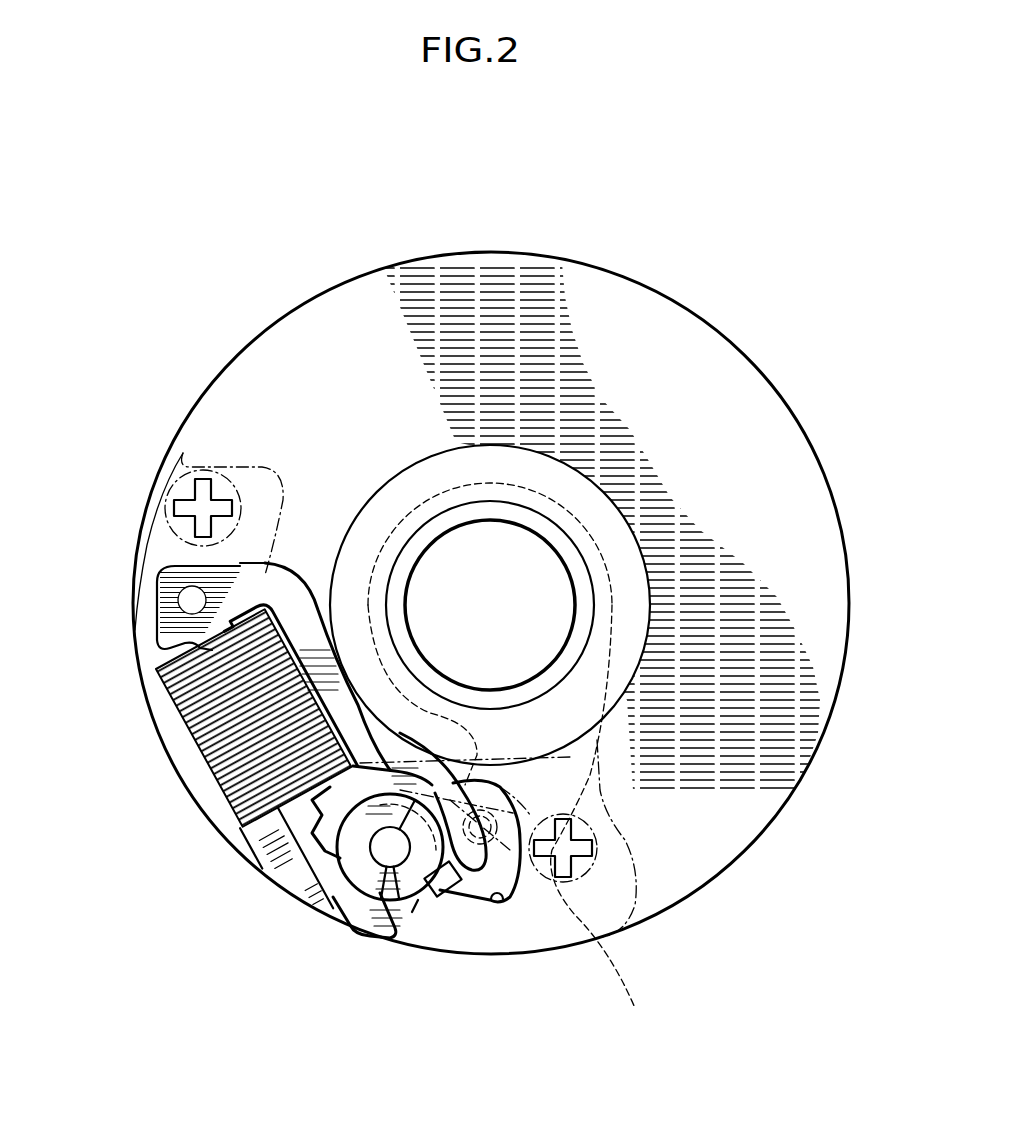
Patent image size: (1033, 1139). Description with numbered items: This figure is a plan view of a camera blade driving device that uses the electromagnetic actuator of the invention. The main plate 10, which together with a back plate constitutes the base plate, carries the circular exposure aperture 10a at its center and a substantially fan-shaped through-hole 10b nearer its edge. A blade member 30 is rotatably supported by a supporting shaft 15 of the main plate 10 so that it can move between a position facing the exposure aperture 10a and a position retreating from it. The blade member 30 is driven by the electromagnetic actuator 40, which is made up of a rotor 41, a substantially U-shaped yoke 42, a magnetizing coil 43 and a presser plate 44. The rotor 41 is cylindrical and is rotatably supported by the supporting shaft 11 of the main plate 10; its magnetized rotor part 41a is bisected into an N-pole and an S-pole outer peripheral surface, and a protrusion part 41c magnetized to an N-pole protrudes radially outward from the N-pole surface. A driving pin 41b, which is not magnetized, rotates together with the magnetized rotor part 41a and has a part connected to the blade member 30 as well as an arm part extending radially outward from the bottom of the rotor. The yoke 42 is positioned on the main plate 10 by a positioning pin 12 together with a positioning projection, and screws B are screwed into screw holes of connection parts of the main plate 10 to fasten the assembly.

The main plate 10 is at (628, 277).
The exposure aperture 10a is at (408, 600).
The through-hole 10b is at (495, 900).
The supporting shaft 11 is at (410, 905).
The positioning pin 12 is at (180, 598).
The supporting shaft 15 is at (509, 825).
The blade member 30 is at (574, 514).
The electromagnetic actuator 40 is at (208, 819).
The rotor 41 is at (393, 872).
The magnetized rotor part 41a is at (355, 878).
The driving pin 41b is at (520, 898).
The protrusion part 41c is at (450, 893).
The yoke 42 is at (283, 852).
The magnetizing coil 43 is at (178, 751).
The presser plate 44 is at (618, 804).
The screw B is at (183, 455).